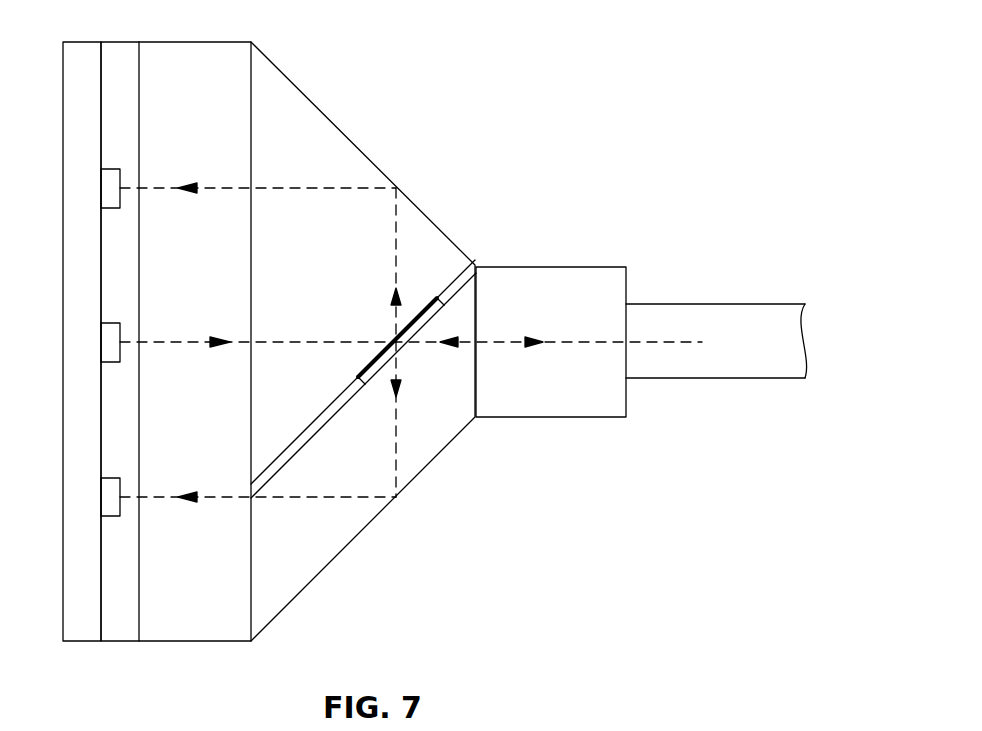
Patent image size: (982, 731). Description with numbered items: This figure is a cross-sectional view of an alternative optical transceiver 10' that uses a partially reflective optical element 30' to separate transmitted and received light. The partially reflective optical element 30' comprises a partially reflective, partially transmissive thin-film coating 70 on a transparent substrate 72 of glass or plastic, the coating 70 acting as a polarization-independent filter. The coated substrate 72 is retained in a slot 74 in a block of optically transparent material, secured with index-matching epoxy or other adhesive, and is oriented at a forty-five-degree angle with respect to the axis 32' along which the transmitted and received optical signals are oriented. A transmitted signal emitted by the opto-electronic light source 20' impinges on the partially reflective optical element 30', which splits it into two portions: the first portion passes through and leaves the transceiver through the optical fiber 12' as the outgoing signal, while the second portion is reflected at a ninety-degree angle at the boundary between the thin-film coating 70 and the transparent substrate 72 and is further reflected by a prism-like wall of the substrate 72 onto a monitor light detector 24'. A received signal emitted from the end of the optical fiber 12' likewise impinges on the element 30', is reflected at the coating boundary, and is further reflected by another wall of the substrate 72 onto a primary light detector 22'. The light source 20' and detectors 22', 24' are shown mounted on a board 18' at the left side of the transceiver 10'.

The optical transceiver 10' is at (582, 48).
The optical fiber 12' is at (716, 377).
The circuit board 18' is at (83, 377).
The opto-electronic light source 20' is at (356, 342).
The primary light detector 22' is at (203, 497).
The monitor light detector 24' is at (203, 188).
The partially reflective optical element 30' is at (288, 341).
The axis 32' is at (551, 342).
The thin-film coating 70 is at (430, 308).
The transparent substrate 72 is at (437, 312).
The slot 74 is at (330, 425).